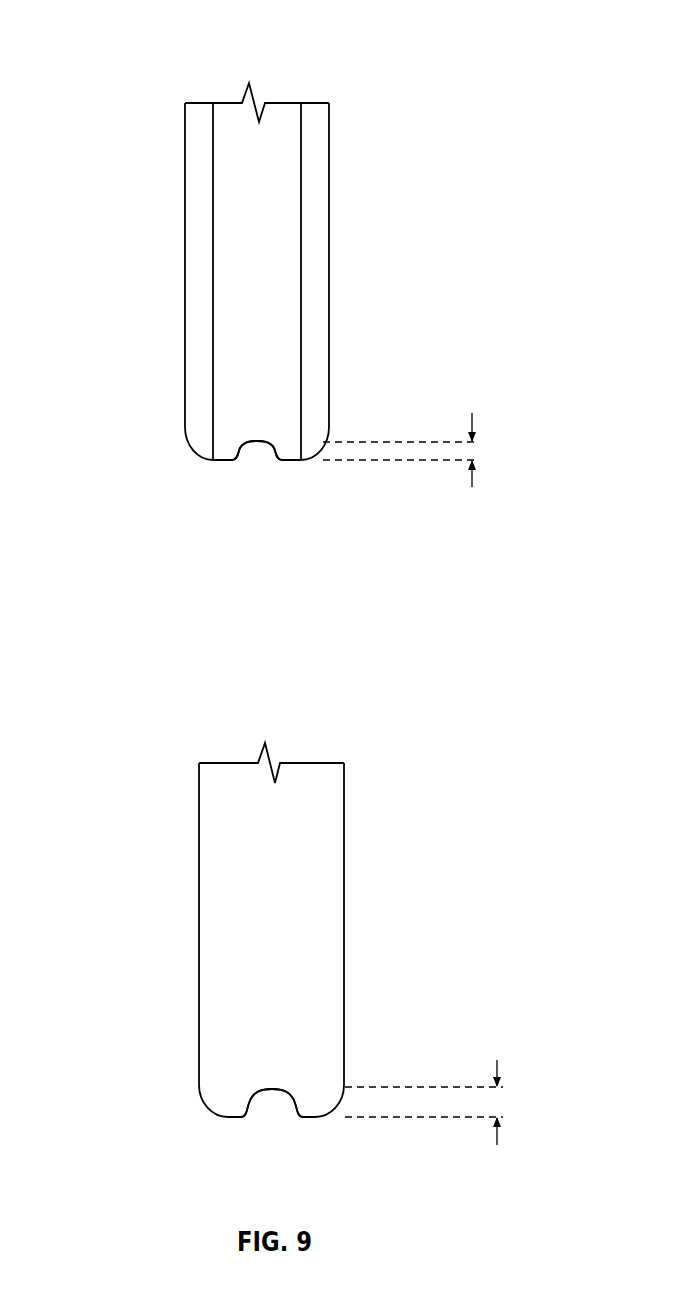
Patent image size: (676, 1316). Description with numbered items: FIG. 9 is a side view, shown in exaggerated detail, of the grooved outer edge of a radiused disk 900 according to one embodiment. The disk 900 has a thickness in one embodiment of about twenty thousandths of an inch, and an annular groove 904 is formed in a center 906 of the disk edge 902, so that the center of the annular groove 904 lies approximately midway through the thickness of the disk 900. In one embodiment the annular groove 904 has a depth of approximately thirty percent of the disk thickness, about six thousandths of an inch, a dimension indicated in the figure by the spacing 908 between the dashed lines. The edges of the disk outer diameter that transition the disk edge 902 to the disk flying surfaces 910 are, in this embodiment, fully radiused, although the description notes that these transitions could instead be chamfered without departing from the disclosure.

The disk 900 is at (116, 39).
The disk edge 902 is at (212, 468).
The annular groove 904 is at (239, 456).
The center 906 is at (276, 457).
The protrusion height 908 is at (473, 420).
The disk flying surfaces 910 is at (185, 243).